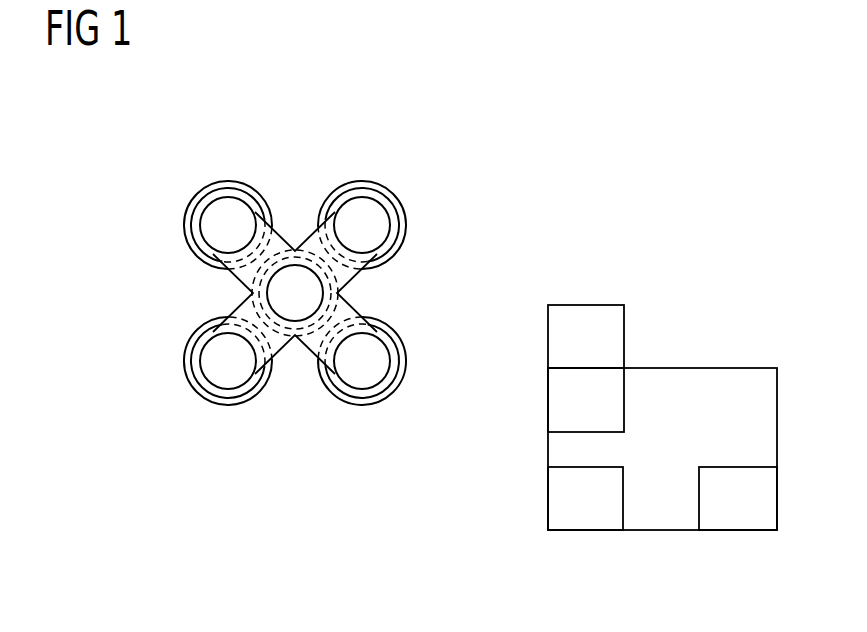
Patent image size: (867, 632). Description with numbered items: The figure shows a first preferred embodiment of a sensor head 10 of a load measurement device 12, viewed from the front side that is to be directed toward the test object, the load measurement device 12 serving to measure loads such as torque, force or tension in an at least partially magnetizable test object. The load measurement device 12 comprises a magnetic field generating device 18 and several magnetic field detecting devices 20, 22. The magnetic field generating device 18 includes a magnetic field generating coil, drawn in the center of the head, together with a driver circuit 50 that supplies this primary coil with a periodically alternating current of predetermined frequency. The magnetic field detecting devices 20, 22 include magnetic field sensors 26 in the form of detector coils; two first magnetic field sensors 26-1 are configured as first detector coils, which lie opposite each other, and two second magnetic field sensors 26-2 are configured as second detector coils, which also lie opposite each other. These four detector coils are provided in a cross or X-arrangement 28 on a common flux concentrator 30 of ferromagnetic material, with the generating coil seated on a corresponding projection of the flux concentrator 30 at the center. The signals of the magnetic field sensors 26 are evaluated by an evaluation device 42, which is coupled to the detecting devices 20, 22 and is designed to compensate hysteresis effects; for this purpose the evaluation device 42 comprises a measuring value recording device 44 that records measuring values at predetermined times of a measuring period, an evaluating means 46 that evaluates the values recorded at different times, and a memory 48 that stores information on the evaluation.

The sensor head 10 is at (127, 297).
The load measurement device 12 is at (207, 495).
The magnetic field generating device 18 is at (338, 292).
The magnetic field detecting device 20 is at (208, 162).
The magnetic field detecting device 22 is at (162, 242).
The magnetic field sensors 26 is at (233, 153).
The first magnetic field sensors 26-1 is at (172, 215).
The second magnetic field sensors 26-2 is at (420, 220).
The X-arrangement 28 is at (370, 155).
The flux concentrator 30 is at (233, 312).
The evaluation device 42 is at (692, 439).
The measuring value recording device 44 is at (600, 516).
The evaluating means 46 is at (600, 418).
The memory 48 is at (752, 516).
The driver circuit 50 is at (600, 355).